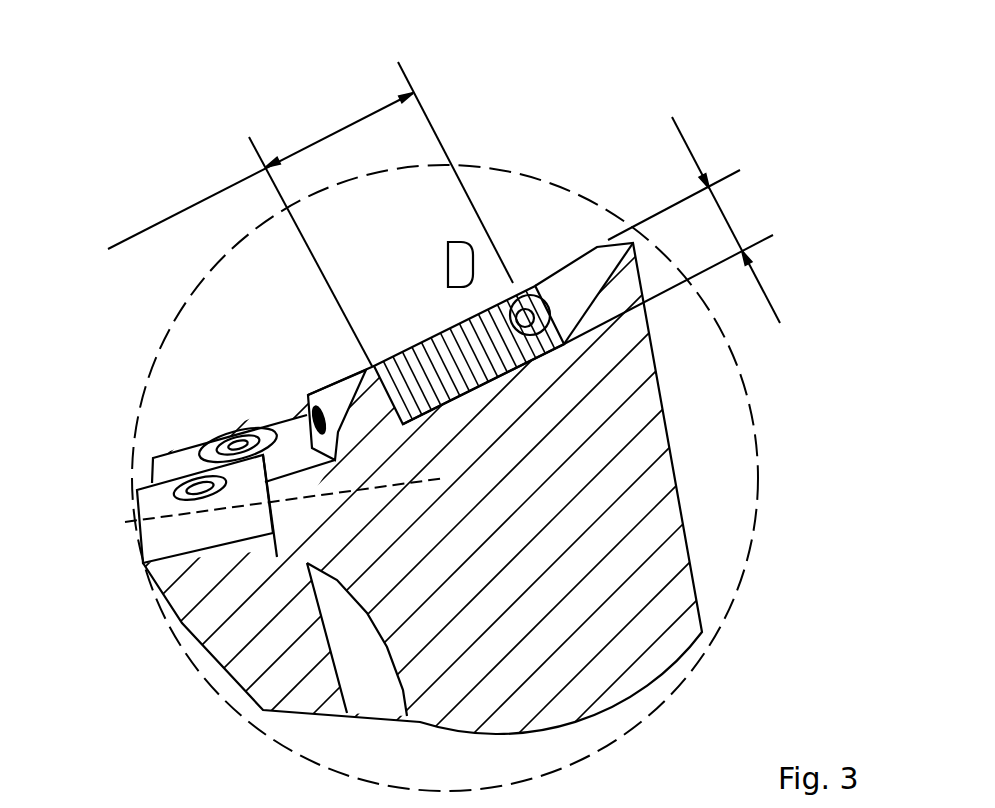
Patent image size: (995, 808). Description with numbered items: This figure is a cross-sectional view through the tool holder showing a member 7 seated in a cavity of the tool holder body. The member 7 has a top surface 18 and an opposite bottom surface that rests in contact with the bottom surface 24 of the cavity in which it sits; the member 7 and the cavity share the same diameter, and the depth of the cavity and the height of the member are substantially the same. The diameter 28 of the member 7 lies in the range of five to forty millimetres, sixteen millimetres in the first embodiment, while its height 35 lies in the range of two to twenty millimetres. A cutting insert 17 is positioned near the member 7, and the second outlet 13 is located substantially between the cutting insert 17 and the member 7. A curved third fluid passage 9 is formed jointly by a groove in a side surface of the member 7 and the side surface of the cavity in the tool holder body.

The member 7 is at (390, 357).
The curved third fluid passage 9 is at (518, 322).
The second outlet 13 is at (305, 425).
The cutting insert 17 is at (205, 512).
The top surface 18 is at (428, 363).
The bottom surface 24 is at (470, 388).
The diameter 28 is at (310, 214).
The height 35 is at (672, 230).